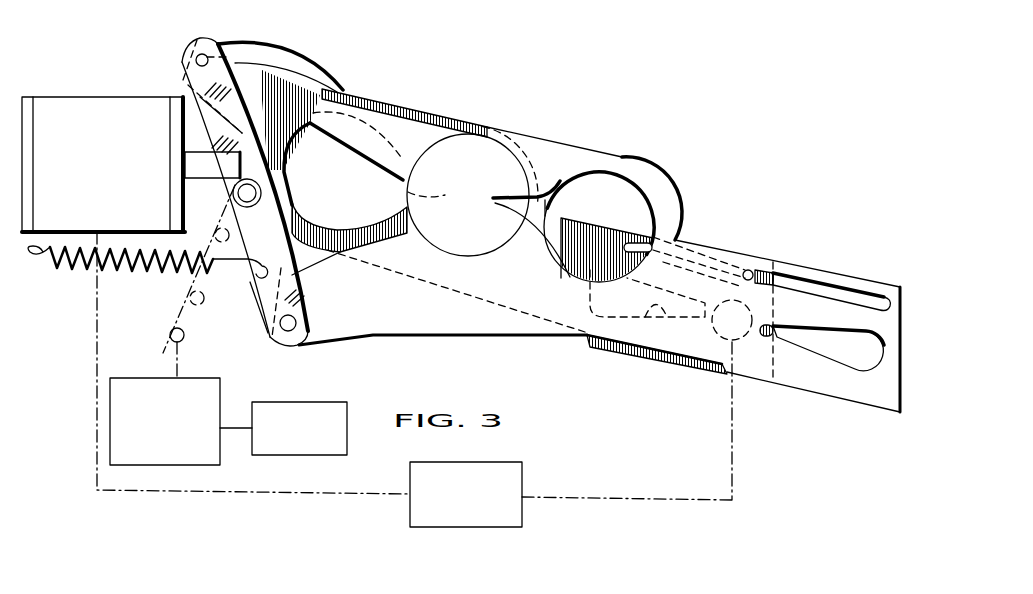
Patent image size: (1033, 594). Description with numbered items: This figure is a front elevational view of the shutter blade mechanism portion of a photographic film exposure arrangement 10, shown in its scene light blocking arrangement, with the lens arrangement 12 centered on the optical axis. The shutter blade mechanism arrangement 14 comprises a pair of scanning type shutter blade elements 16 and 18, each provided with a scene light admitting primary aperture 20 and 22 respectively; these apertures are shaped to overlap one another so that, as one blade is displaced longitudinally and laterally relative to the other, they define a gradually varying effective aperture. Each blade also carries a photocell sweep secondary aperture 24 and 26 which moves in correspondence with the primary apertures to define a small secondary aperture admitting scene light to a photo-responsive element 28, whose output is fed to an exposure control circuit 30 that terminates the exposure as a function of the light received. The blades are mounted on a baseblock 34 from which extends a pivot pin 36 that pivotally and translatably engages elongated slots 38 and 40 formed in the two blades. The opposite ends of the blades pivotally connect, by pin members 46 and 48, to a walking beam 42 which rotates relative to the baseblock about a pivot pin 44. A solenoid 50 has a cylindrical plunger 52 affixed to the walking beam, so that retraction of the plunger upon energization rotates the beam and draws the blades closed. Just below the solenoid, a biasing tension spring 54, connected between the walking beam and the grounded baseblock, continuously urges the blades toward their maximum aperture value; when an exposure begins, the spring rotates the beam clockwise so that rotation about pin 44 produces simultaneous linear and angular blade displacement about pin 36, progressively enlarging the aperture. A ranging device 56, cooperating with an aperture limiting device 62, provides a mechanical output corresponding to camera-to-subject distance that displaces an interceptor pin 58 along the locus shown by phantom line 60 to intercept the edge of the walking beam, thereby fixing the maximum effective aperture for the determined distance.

The photographic film exposure arrangement 10 is at (532, 105).
The lens arrangement 12 is at (485, 230).
The shutter blade mechanism arrangement 14 is at (462, 108).
The shutter blade element 16 is at (273, 77).
The shutter blade element 18 is at (380, 337).
The scene light admitting primary aperture 20 is at (305, 212).
The scene light admitting primary aperture 22 is at (568, 254).
The photocell sweep secondary aperture 24 is at (657, 322).
The photocell sweep secondary aperture 26 is at (830, 342).
The photo-responsive element 28 is at (723, 295).
The exposure control circuit 30 is at (497, 527).
The baseblock 34 is at (729, 193).
The pivot pin 36 is at (752, 268).
The elongated slot 38 is at (637, 238).
The elongated slot 40 is at (836, 292).
The walking beam 42 is at (258, 307).
The pivot pin 44 is at (215, 235).
The pin member 46 is at (200, 53).
The pin member 48 is at (298, 322).
The solenoid 50 is at (150, 93).
The plunger 52 is at (203, 180).
The biasing tension spring 54 is at (160, 272).
The ranging device 56 is at (293, 402).
The interceptor pin 58 is at (171, 333).
The phantom line 60 is at (205, 296).
The aperture limiting device 62 is at (209, 374).